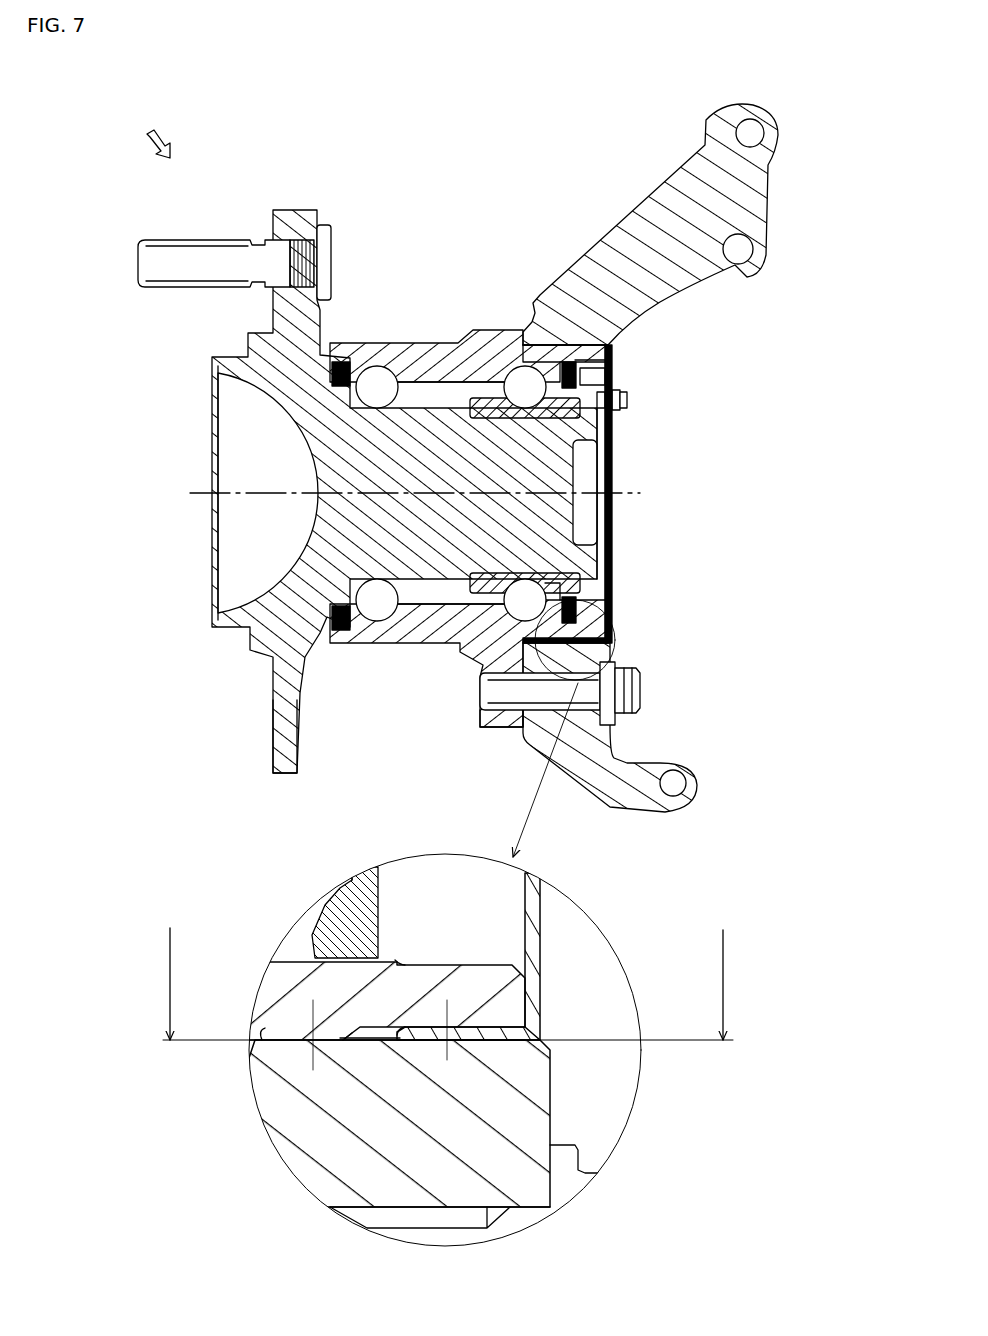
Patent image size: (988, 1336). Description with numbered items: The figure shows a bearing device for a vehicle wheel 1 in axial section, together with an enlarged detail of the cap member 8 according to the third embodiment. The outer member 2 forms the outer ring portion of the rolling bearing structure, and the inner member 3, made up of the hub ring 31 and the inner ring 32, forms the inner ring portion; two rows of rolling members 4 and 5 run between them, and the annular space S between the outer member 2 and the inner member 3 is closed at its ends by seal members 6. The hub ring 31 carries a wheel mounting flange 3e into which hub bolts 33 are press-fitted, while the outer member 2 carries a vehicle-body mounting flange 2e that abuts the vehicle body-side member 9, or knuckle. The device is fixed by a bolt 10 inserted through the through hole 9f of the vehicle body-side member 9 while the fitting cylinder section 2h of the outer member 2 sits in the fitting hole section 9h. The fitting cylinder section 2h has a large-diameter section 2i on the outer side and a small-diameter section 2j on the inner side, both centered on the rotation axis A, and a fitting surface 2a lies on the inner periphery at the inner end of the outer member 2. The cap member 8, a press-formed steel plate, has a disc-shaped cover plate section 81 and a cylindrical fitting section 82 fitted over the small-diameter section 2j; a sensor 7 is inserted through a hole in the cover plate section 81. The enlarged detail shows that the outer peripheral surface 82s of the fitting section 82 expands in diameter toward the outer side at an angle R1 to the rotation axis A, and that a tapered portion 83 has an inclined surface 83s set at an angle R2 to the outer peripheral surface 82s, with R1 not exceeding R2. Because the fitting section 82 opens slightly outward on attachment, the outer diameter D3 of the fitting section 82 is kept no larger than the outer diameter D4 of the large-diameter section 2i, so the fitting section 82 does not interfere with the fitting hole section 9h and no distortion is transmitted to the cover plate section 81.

The bearing device for a vehicle wheel 1 is at (151, 132).
The outer member 2 is at (487, 325).
The fitting surface 2a is at (355, 953).
The vehicle-body mounting flange 2e is at (500, 730).
The fitting cylinder section 2h is at (556, 295).
The large-diameter section 2i is at (560, 350).
The small-diameter section 2j is at (590, 345).
The inner member 3 is at (690, 578).
The wheel mounting flange 3e is at (286, 778).
The hub ring 31 is at (600, 560).
The inner ring 32 is at (575, 593).
The hub bolt 33 is at (190, 238).
The rolling member 4 is at (540, 410).
The rolling member 5 is at (363, 410).
The seal member 6 is at (398, 892).
The sensor 7 is at (627, 400).
The cap member 8 is at (695, 655).
The cover plate section 81 is at (615, 635).
The fitting section 82 is at (614, 670).
The outer peripheral surface 82s is at (480, 1043).
The tapered portion 83 is at (412, 1045).
The inclined surface 83s is at (405, 1045).
The vehicle body-side member 9 is at (612, 210).
The through hole 9f is at (367, 1215).
The fitting hole section 9h is at (612, 363).
The bolt 10 is at (628, 725).
The rotation axis A is at (423, 493).
The annular space S is at (443, 378).
The outer diameter of the fitting section D3 is at (704, 985).
The outer diameter of the large-diameter section D4 is at (151, 984).
The angle of the outer peripheral surface R1 is at (435, 1028).
The angle of the inclined surface R2 is at (266, 1042).